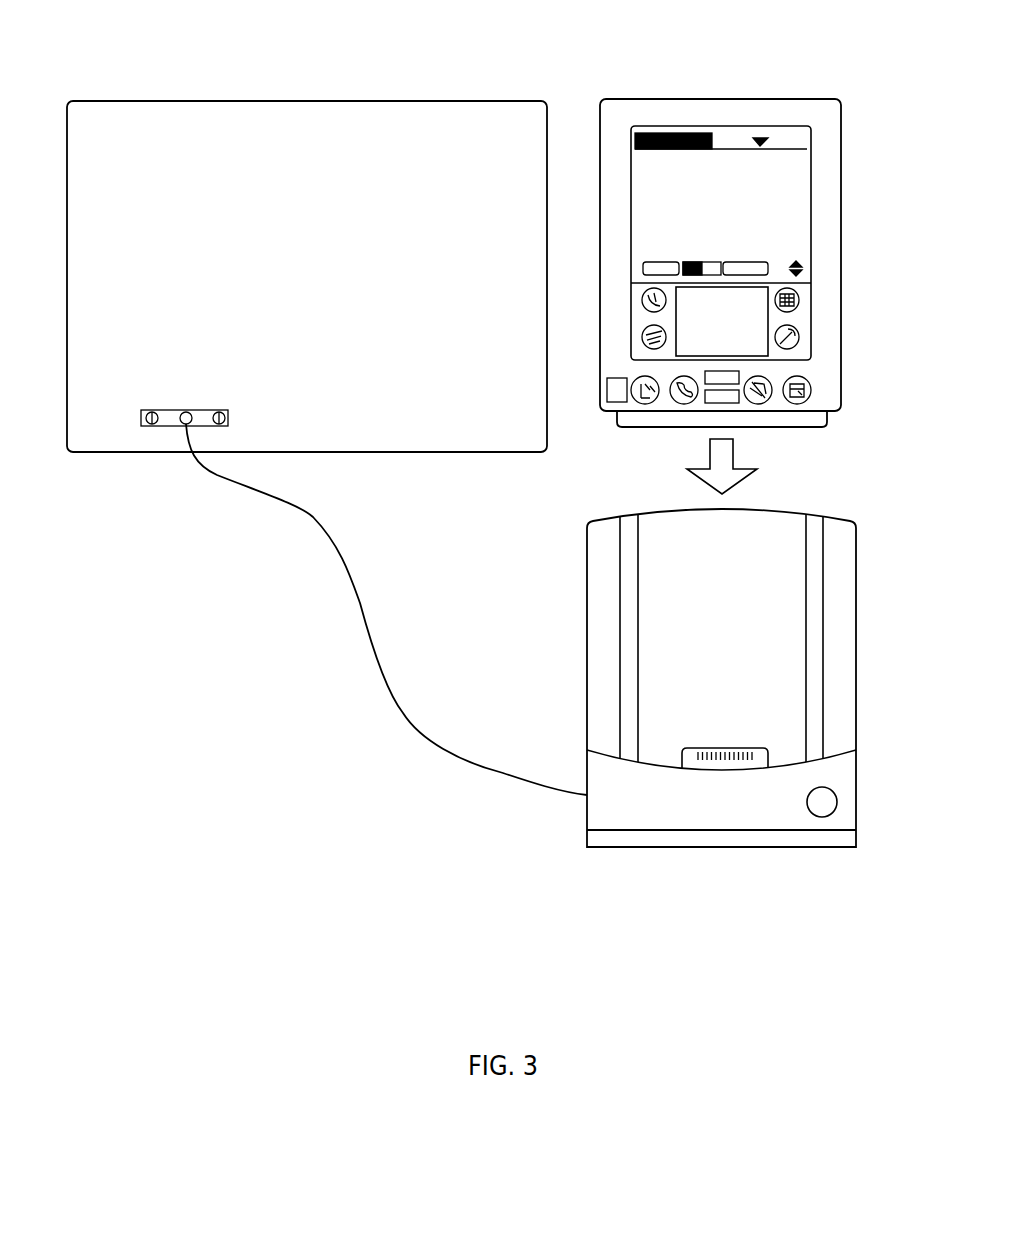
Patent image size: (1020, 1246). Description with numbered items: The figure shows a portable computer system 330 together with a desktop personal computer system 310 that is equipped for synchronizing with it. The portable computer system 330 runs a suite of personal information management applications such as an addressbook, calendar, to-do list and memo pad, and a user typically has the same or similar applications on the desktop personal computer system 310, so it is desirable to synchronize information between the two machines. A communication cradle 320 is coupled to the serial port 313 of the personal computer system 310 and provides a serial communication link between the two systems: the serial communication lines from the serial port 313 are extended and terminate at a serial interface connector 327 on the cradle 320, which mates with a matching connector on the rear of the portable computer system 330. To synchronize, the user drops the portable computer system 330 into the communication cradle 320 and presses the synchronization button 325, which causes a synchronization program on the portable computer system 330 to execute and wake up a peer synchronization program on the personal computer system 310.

The desktop personal computer system 310 is at (260, 101).
The serial port 313 is at (170, 420).
The communication cradle 320 is at (688, 848).
The synchronization button 325 is at (817, 800).
The serial interface connector 327 is at (718, 747).
The portable computer system 330 is at (704, 99).